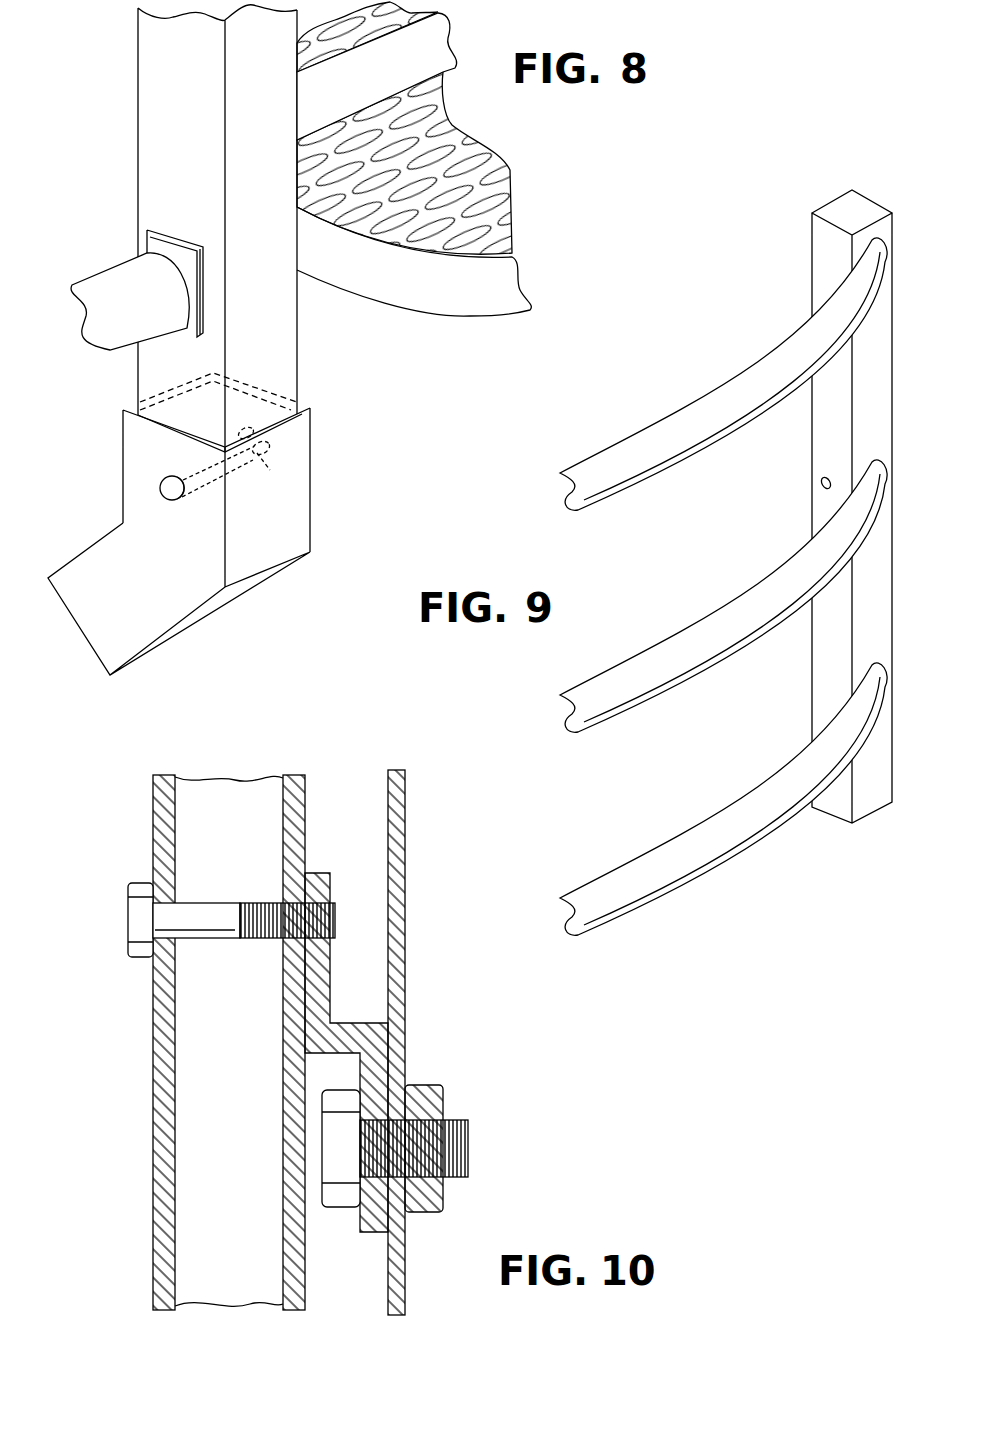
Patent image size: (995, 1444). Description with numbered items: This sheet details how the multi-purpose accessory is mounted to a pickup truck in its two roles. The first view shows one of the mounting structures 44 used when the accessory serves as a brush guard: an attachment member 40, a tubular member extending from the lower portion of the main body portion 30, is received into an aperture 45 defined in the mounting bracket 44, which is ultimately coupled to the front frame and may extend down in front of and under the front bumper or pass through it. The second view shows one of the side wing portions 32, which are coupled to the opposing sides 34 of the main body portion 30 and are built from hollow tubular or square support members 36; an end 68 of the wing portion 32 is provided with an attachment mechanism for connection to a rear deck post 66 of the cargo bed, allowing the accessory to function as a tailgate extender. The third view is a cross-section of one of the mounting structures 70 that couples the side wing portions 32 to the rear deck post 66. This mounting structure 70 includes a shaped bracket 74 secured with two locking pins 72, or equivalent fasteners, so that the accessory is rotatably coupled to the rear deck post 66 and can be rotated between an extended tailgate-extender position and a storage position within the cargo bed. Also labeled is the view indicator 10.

In FIG. 9, the fastener hole 10 is at (895, 453).
In FIG. 8, the main body portion 30 is at (455, 173).
In FIG. 8, the wing portion 32 is at (115, 278).
In FIG. 9, the wing portion 32 is at (723, 586).
In FIG. 8, the opposing sides 34 is at (178, 112).
In FIG. 9, the support member 36 is at (737, 405).
In FIG. 8, the attachment member 40 is at (272, 348).
In FIG. 8, the mounting structure 44 is at (282, 528).
In FIG. 8, the aperture 45 is at (185, 423).
In FIG. 10, the rear deck post 66 is at (396, 832).
In FIG. 9, the end 68 is at (823, 263).
In FIG. 10, the end 68 is at (165, 817).
In FIG. 10, the mounting structure 70 is at (480, 1052).
In FIG. 8, the locking pin 72 is at (160, 494).
In FIG. 10, the locking pin 72 is at (167, 920).
In FIG. 10, the shaped bracket 74 is at (360, 1030).